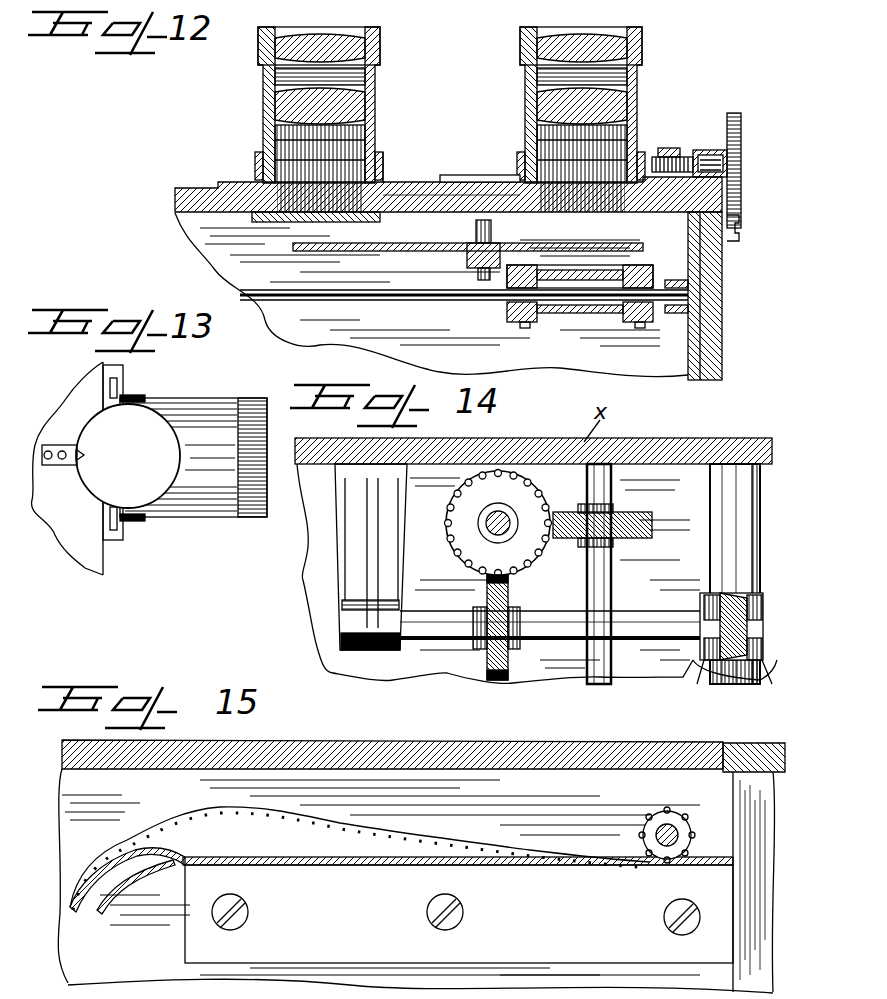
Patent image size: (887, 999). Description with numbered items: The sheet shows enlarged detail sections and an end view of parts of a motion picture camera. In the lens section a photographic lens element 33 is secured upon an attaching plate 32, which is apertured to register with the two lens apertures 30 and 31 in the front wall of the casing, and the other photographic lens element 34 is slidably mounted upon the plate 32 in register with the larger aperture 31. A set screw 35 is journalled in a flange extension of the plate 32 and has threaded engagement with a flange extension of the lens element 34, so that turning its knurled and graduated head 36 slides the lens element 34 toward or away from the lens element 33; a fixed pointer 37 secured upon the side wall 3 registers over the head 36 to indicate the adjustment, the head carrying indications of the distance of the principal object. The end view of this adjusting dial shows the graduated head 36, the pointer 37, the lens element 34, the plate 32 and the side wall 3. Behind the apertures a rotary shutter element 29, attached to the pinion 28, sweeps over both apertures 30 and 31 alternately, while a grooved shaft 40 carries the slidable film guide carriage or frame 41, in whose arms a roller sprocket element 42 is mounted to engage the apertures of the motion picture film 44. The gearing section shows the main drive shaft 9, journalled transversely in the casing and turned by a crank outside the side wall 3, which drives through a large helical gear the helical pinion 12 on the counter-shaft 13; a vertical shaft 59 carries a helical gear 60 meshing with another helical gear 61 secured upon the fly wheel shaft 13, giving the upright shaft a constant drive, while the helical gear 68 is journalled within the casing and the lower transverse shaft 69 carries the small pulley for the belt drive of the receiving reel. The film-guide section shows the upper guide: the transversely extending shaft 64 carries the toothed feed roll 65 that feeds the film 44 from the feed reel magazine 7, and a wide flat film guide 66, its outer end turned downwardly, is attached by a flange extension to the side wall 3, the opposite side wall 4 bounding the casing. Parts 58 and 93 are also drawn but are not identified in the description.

In FIG. 12, the side wall 3 is at (717, 353).
In FIG. 13, the side wall 3 is at (67, 468).
In FIG. 14, the side wall 3 is at (537, 573).
In FIG. 15, the side wall 3 is at (629, 758).
In FIG. 14, the side wall 4 is at (668, 440).
In FIG. 15, the feed reel magazine 7 is at (750, 843).
In FIG. 14, the main drive shaft 9 is at (742, 543).
In FIG. 14, the helical pinion 12 is at (762, 637).
In FIG. 14, the counter-shaft 13 is at (693, 660).
In FIG. 12, the pinion 28 is at (414, 200).
In FIG. 12, the rotary shutter element 29 is at (270, 222).
In FIG. 12, the lens aperture 30 is at (385, 178).
In FIG. 12, the lens aperture 31 is at (515, 197).
In FIG. 12, the attaching plate 32 is at (456, 185).
In FIG. 13, the attaching plate 32 is at (122, 536).
In FIG. 12, the photographic lens element 33 is at (377, 107).
In FIG. 12, the photographic lens element 34 is at (633, 113).
In FIG. 13, the photographic lens element 34 is at (193, 458).
In FIG. 12, the set screw 35 is at (682, 158).
In FIG. 12, the knurled and graduated head 36 is at (730, 162).
In FIG. 13, the knurled and graduated head 36 is at (128, 456).
In FIG. 12, the fixed pointer 37 is at (744, 233).
In FIG. 13, the fixed pointer 37 is at (57, 447).
In FIG. 12, the grooved shaft 40 is at (386, 301).
In FIG. 12, the film guide carriage 41 is at (640, 274).
In FIG. 12, the roller sprocket element 42 is at (513, 312).
In FIG. 15, the motion picture film 44 is at (327, 850).
In FIG. 12, the shelf 58 is at (330, 245).
In FIG. 14, the shaft 59 is at (495, 518).
In FIG. 14, the helical gear 60 is at (498, 523).
In FIG. 14, the helical gear 61 is at (507, 670).
In FIG. 15, the transversely extending shaft 64 is at (678, 834).
In FIG. 15, the toothed feed roll 65 is at (667, 818).
In FIG. 15, the film guide 66 is at (377, 866).
In FIG. 14, the helical gear 68 is at (645, 513).
In FIG. 14, the lower transverse shaft 69 is at (598, 684).
In FIG. 14, the horizontal shaft 93 is at (650, 620).